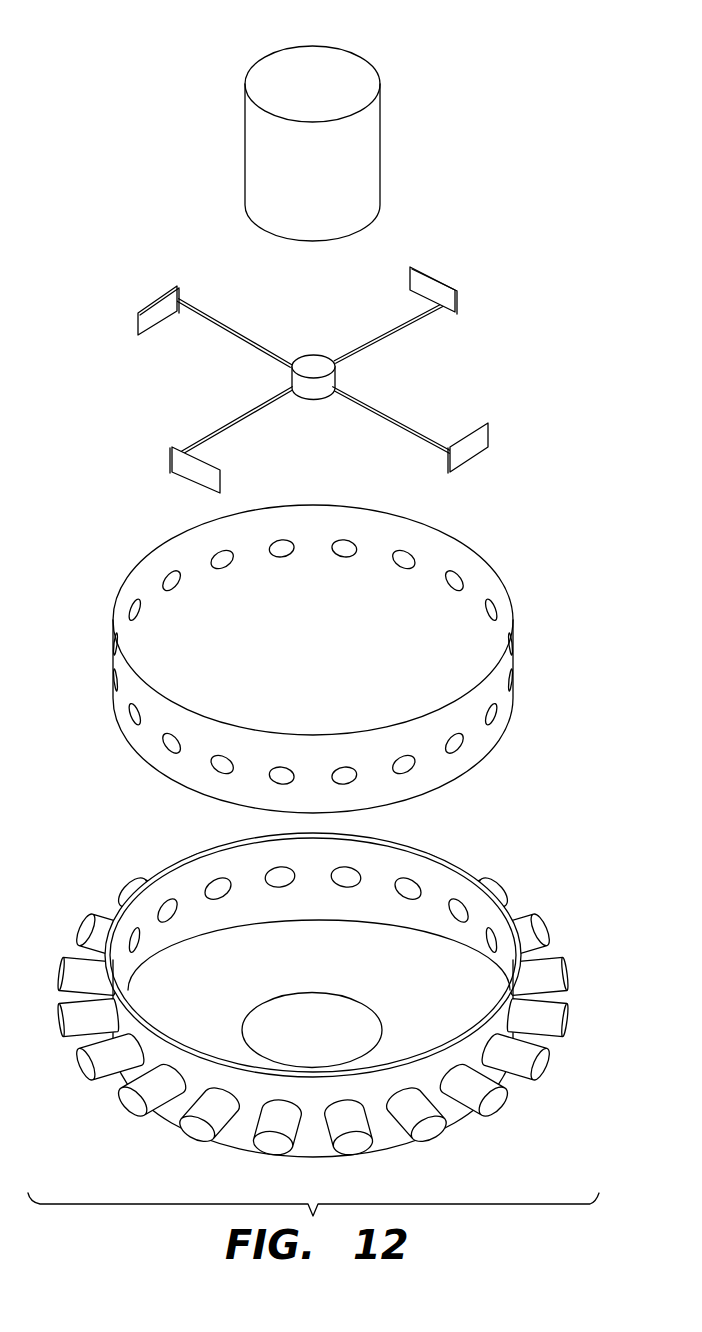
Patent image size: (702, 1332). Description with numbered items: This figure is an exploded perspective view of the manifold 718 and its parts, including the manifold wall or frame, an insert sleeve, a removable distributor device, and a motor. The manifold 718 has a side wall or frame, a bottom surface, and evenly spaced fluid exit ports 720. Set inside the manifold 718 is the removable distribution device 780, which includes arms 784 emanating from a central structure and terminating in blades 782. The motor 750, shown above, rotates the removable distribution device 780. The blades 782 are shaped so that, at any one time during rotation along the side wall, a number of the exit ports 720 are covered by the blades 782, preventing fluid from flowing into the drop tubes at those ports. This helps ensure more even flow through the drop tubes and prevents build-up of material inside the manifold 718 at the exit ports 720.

The manifold 718 is at (93, 79).
The motor 750 is at (373, 158).
The removable distribution device 780 is at (128, 385).
The blades 782 is at (157, 305).
The arms 784 is at (236, 330).
The fluid exit ports 720 is at (282, 880).